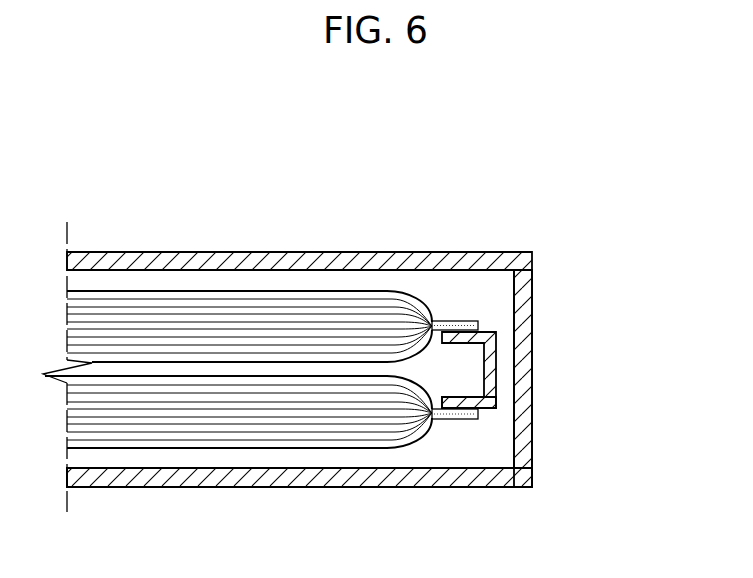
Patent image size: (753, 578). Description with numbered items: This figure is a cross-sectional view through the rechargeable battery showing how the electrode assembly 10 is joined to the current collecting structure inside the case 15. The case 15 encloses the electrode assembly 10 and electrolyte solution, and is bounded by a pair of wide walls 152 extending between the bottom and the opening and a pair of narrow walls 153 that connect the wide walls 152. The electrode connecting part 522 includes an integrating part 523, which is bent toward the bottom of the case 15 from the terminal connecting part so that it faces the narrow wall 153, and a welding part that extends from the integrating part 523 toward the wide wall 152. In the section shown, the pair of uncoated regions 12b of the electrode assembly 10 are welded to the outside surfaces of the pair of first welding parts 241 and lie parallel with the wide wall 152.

The electrode assembly 10 is at (228, 290).
The uncoated region 12b is at (455, 321).
The electrode connecting part 522 is at (494, 324).
The integrating part 523 is at (490, 355).
The first welding part 241 is at (455, 402).
The narrow wall 153 is at (533, 447).
The wide wall 152 is at (475, 487).
The case 15 is at (667, 470).